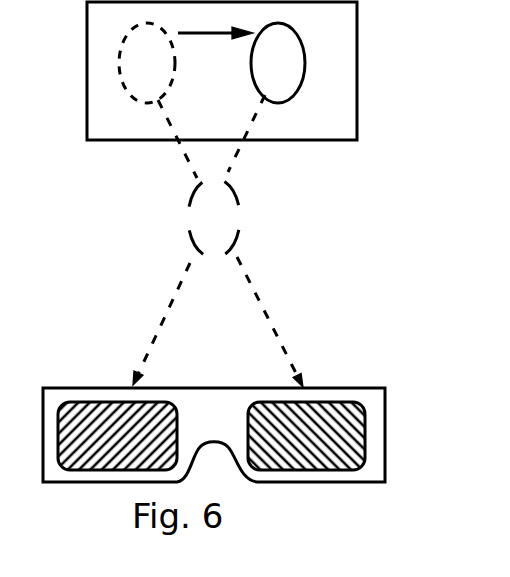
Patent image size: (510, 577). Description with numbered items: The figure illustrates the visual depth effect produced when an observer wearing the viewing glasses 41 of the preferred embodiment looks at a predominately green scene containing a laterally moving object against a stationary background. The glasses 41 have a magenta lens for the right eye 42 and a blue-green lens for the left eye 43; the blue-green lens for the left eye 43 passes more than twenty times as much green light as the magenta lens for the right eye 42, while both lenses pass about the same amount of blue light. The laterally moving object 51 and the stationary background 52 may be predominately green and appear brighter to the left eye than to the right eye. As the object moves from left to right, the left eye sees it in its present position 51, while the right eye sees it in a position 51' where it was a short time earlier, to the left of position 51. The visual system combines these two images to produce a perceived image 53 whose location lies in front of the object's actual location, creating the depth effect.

The viewing glasses 41 is at (205, 388).
The magenta lens for the right eye 42 is at (338, 408).
The blue-green lens for the left eye 43 is at (98, 408).
The laterally moving object 51 is at (279, 120).
The position of the object a short time earlier 51' is at (129, 120).
The stationary background 52 is at (325, 103).
The perceived image 53 is at (207, 237).